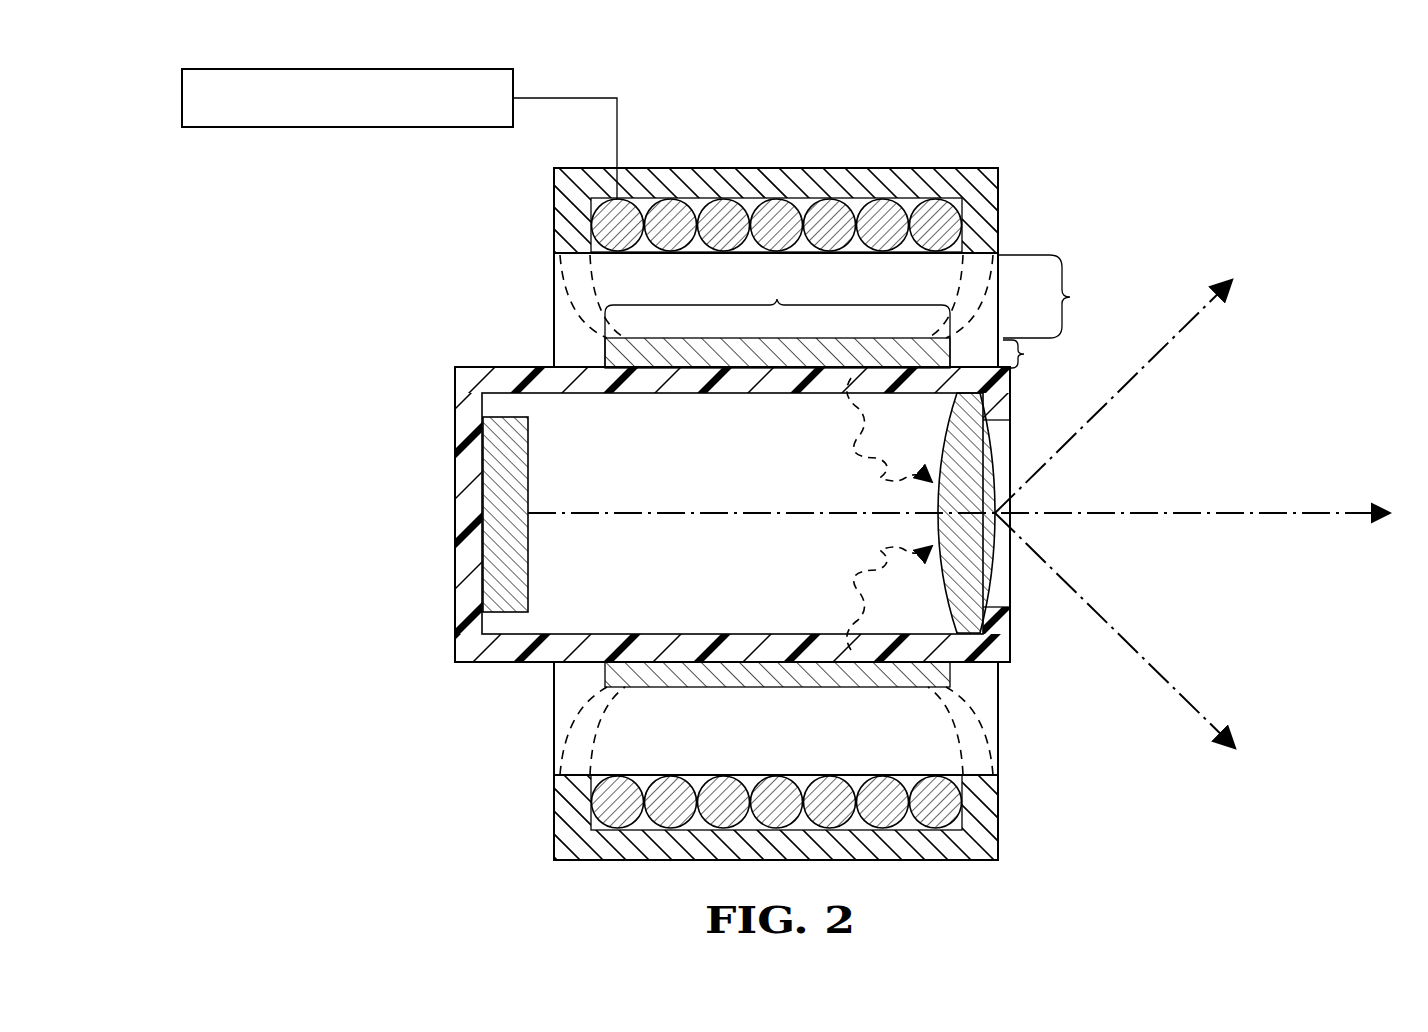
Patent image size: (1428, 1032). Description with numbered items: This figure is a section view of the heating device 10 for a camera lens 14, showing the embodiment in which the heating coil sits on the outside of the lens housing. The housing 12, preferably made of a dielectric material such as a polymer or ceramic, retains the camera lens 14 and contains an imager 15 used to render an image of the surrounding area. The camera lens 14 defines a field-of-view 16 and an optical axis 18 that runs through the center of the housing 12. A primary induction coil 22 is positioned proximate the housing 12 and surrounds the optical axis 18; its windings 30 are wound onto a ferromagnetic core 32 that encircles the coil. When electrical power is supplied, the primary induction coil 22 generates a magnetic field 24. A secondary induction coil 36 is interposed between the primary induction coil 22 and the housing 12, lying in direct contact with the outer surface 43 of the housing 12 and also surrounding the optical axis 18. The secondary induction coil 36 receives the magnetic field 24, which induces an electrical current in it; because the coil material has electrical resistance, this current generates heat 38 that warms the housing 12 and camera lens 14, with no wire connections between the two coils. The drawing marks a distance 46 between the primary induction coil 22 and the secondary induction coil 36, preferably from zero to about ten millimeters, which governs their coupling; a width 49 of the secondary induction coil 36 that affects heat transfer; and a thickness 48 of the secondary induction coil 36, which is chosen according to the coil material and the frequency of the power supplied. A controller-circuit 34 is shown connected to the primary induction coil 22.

The heating device 10 is at (1084, 68).
The housing 12 is at (492, 652).
The camera lens 14 is at (985, 578).
The imager 15 is at (490, 490).
The field-of-view 16 is at (1145, 370).
The optical axis 18 is at (548, 513).
The primary induction coil 22 is at (950, 860).
The magnetic field 24 is at (575, 283).
The windings 30 is at (607, 237).
The ferromagnetic core 32 is at (560, 830).
The controller circuit 34 is at (208, 70).
The secondary induction coil 36 is at (605, 675).
The heat 38 is at (862, 590).
The outer surface 43 is at (485, 365).
The distance 46 is at (1054, 296).
The thickness 48 is at (1033, 354).
The width 49 is at (777, 318).